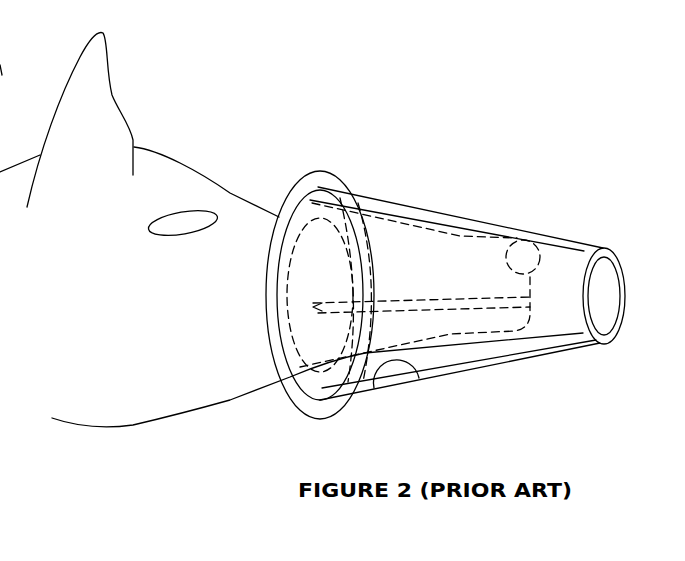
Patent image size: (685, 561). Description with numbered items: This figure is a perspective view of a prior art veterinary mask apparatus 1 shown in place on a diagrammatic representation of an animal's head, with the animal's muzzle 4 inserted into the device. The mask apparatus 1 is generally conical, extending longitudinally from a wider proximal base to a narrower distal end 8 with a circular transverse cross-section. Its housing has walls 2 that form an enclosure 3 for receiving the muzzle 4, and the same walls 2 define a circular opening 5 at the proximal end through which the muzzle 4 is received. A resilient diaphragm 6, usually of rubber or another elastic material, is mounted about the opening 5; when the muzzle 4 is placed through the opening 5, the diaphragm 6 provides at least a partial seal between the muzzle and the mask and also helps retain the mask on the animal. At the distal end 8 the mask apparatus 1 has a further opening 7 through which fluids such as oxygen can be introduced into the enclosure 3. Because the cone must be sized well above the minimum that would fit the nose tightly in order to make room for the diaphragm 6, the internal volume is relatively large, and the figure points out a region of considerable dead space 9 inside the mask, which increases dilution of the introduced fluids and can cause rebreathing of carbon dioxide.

The mask apparatus 1 is at (488, 284).
The walls 2 is at (382, 213).
The enclosure 3 is at (374, 388).
The animal's muzzle 4 is at (405, 277).
The opening 5 is at (272, 303).
The resilient diaphragm 6 is at (290, 355).
The opening 7 is at (607, 288).
The distal end 8 is at (608, 250).
The dead space 9 is at (560, 312).